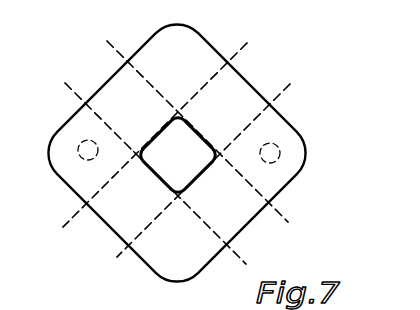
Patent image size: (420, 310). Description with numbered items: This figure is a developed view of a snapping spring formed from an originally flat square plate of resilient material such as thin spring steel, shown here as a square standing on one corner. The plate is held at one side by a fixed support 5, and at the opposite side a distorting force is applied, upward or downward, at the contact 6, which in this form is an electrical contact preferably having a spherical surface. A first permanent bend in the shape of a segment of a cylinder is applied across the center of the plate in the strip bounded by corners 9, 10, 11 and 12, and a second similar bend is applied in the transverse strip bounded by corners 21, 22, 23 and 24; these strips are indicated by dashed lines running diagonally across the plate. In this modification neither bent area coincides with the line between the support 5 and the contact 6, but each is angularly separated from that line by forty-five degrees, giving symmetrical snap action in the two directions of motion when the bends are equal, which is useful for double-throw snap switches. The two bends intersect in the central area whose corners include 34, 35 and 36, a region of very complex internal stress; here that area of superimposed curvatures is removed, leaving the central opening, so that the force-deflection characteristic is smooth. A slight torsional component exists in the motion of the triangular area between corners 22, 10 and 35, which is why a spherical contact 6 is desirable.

The fixed support 5 is at (80, 158).
The contact 6 is at (280, 144).
The corner of first bend area 9 is at (197, 127).
The corner of first bend area 10 is at (203, 131).
The corner of first bend area 11 is at (155, 180).
The corner of first bend area 12 is at (148, 173).
The corner of second bend area 21 is at (155, 130).
The corner of second bend area 22 is at (208, 170).
The corner of second bend area 23 is at (200, 181).
The corner of second bend area 24 is at (148, 135).
The corner of intersection area 34 is at (175, 112).
The corner of intersection area 35 is at (173, 209).
The corner of intersection area 36 is at (123, 153).